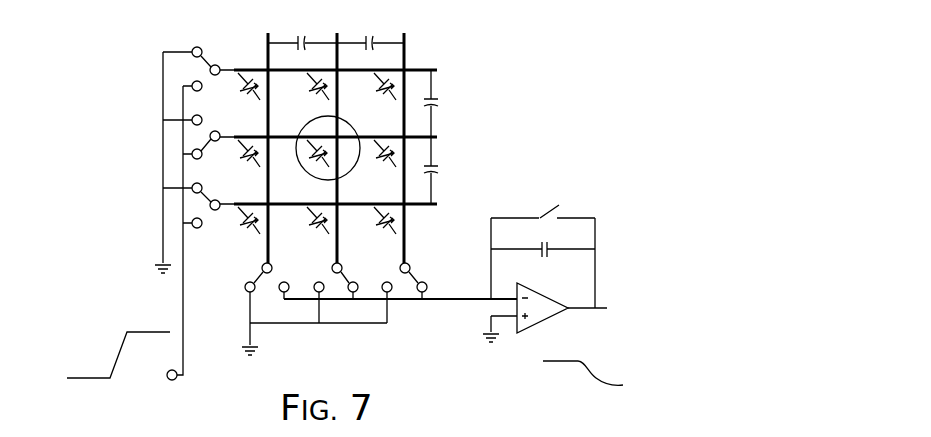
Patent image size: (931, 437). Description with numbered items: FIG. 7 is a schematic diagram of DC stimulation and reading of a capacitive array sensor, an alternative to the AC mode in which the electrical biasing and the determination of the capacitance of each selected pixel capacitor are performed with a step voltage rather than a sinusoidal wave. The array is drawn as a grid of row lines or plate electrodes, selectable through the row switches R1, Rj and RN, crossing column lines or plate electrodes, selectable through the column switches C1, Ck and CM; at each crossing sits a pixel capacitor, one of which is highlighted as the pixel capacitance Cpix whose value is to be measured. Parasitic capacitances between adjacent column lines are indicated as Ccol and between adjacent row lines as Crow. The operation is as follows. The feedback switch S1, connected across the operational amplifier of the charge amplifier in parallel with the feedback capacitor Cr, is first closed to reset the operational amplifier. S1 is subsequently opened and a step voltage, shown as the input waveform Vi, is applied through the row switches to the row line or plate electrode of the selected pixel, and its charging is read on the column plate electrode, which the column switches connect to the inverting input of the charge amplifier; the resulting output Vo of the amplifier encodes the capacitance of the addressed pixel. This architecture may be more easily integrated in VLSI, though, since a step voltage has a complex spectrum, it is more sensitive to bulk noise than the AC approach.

The row 1 electrode switch R1 is at (213, 56).
The row j electrode switch Rj is at (213, 128).
The row N electrode switch RN is at (213, 192).
The column-to-column parasitic capacitance Ccol is at (336, 34).
The row-to-row parasitic capacitance Crow is at (448, 137).
The pixel capacitance Cpix is at (324, 151).
The column 1 electrode switch C1 is at (270, 309).
The column k electrode switch Ck is at (342, 293).
The column M electrode switch CM is at (412, 293).
The feedback switch S1 is at (543, 209).
The feedback reference capacitor Cr is at (543, 243).
The input voltage step Vi is at (118, 355).
The output voltage of charge amplifier Vo is at (583, 346).